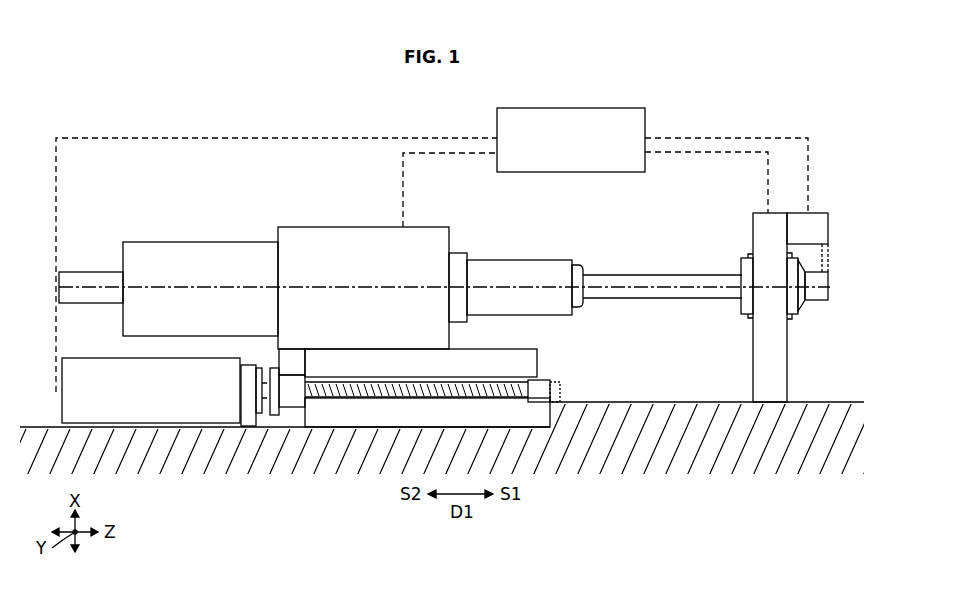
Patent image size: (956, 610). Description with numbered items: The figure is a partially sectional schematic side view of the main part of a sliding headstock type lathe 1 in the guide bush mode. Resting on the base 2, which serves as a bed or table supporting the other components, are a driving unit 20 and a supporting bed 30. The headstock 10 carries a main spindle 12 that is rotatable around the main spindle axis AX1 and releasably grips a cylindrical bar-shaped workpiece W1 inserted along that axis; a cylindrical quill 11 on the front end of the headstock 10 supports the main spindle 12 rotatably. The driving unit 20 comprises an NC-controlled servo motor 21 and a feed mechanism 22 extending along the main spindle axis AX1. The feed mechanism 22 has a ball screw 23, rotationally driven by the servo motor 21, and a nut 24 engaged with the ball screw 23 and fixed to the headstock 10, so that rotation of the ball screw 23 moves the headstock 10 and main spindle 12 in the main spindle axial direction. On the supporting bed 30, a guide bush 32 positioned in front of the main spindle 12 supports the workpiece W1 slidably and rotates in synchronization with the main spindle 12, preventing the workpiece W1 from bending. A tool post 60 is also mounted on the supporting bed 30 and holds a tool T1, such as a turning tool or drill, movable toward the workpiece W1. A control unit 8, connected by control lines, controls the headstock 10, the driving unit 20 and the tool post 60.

The sliding headstock type lathe 1 is at (81, 117).
The base 2 is at (690, 405).
The control unit 8 is at (585, 167).
The headstock 10 is at (320, 256).
The quill 11 is at (522, 262).
The main spindle 12 is at (582, 268).
The driving unit 20 is at (178, 422).
The servo motor 21 is at (120, 409).
The feed mechanism 22 is at (348, 421).
The ball screw 23 is at (410, 398).
The nut 24 is at (297, 407).
The supporting bed 30 is at (788, 373).
The guide bush 32 is at (799, 302).
The tool post 60 is at (823, 212).
The main spindle axis AX1 is at (365, 290).
The workpiece W1 is at (700, 273).
The tool T1 is at (836, 266).